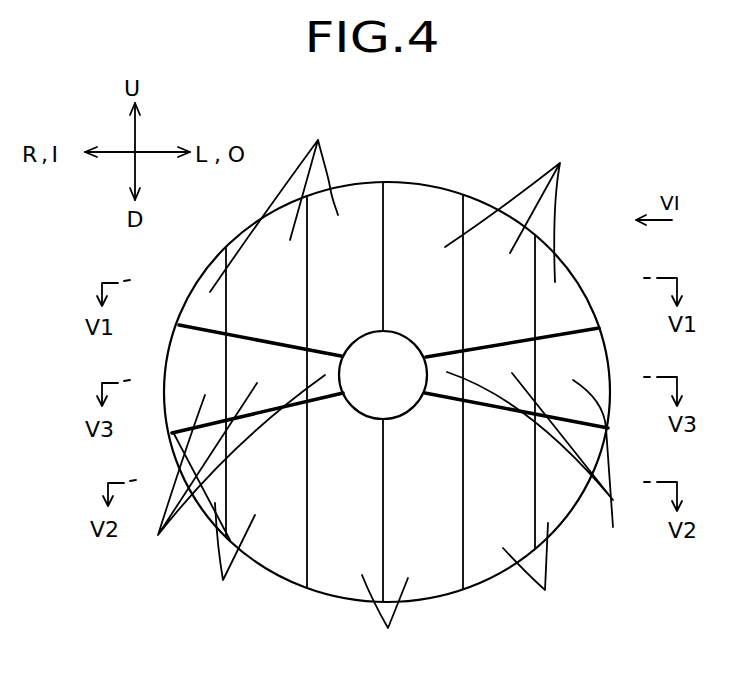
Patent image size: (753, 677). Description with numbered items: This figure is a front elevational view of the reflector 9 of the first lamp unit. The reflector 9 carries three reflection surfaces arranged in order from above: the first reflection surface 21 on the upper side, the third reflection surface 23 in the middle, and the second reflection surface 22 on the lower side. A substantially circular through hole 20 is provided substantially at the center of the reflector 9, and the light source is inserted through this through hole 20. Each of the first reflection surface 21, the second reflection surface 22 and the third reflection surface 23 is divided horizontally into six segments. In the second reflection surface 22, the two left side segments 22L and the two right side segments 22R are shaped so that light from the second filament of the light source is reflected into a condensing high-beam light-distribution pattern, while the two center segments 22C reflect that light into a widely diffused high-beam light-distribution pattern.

The reflector 9 is at (447, 187).
The through hole 20 is at (414, 351).
The first reflection surface 21 is at (396, 200).
The second reflection surface 22 is at (385, 516).
The right side segments 22R is at (241, 498).
The left side segments 22L is at (530, 501).
The center segments 22C is at (398, 618).
The third reflection surface 23 is at (613, 497).